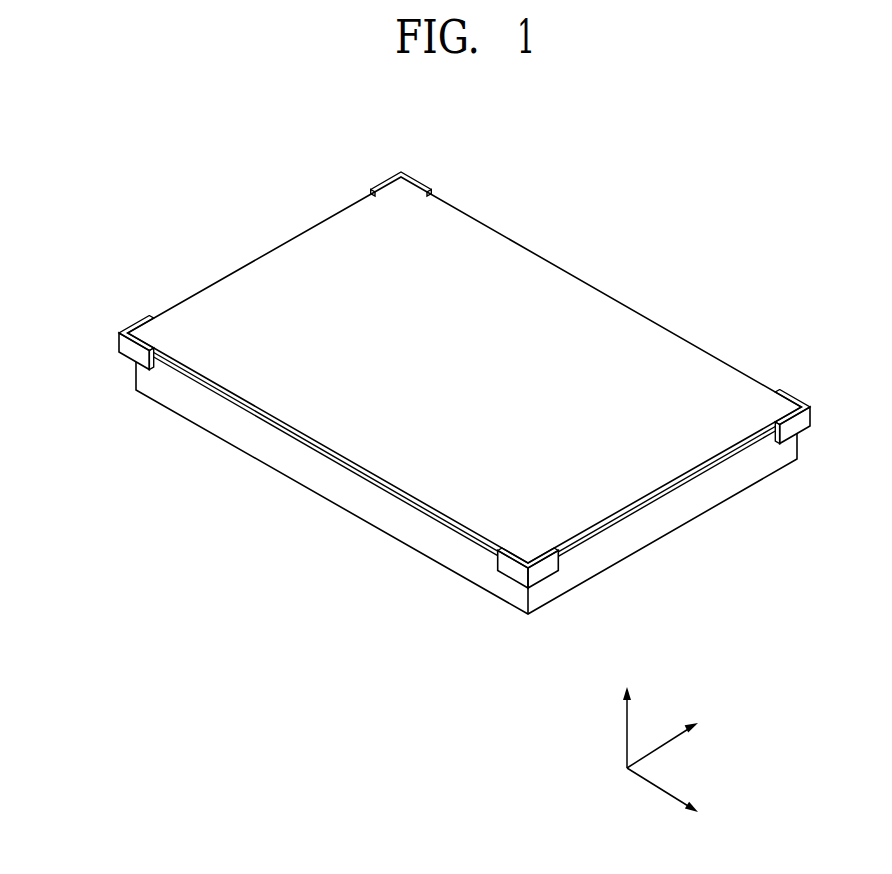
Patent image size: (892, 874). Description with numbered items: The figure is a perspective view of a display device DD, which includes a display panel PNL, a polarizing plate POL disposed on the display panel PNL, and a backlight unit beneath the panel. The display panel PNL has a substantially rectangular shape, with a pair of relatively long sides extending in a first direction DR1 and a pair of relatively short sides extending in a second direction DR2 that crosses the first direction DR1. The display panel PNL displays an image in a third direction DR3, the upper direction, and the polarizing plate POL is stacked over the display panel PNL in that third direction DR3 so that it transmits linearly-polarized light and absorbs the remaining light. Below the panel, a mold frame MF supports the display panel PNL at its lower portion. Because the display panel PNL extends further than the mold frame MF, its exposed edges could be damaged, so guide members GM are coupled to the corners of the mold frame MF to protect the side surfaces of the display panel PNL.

The display device DD is at (616, 201).
The guide member GM is at (118, 345).
The mold frame MF is at (162, 397).
The polarizing plate POL is at (680, 473).
The display panel PNL is at (666, 495).
The first direction DR1 is at (682, 799).
The second direction DR2 is at (682, 738).
The third direction DR3 is at (627, 713).